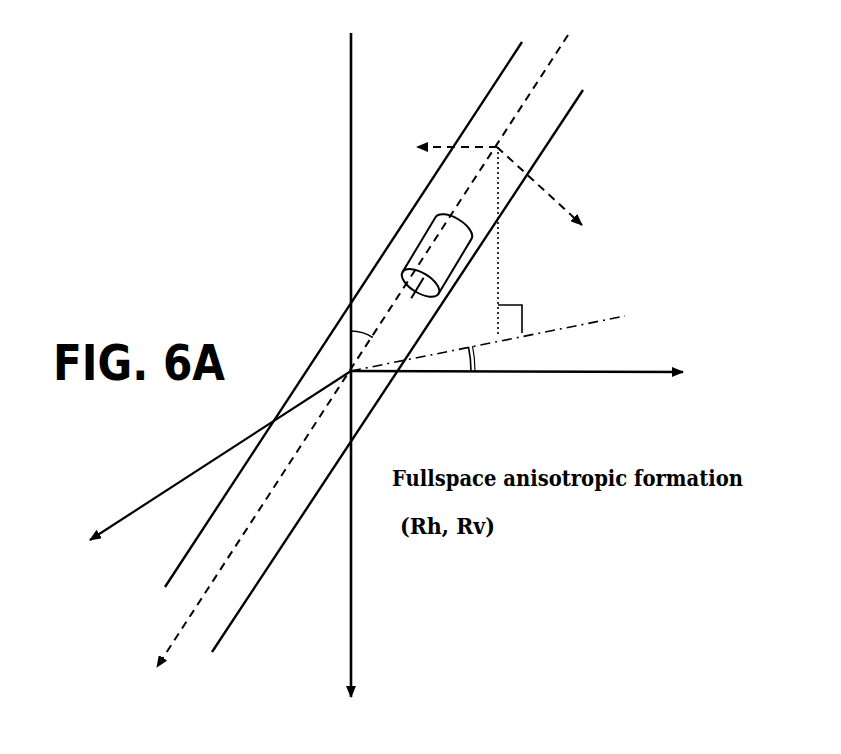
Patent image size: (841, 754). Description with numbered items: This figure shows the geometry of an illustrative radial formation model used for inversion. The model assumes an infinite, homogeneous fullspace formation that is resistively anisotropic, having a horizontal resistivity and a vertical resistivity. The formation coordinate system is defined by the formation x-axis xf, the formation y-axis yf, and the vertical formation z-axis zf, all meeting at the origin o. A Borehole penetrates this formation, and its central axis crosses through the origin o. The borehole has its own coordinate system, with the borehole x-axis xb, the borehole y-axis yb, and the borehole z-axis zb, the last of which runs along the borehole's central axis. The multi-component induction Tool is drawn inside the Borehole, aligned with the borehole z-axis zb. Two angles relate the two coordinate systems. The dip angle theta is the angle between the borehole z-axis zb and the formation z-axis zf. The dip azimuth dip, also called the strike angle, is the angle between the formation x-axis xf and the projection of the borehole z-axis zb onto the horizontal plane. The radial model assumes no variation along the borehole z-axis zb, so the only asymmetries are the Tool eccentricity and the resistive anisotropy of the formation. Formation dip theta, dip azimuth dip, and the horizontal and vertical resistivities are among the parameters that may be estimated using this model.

The borehole Borehole is at (483, 91).
The multi-component induction tool Tool is at (467, 226).
The origin o is at (340, 358).
The formation x-axis xf is at (534, 381).
The formation y-axis yf is at (202, 455).
The formation z-axis zf is at (374, 369).
The borehole x-axis xb is at (557, 194).
The borehole y-axis yb is at (440, 159).
The borehole z-axis zb is at (346, 363).
The dip azimuth dip is at (488, 346).
The dip angle theta is at (373, 308).